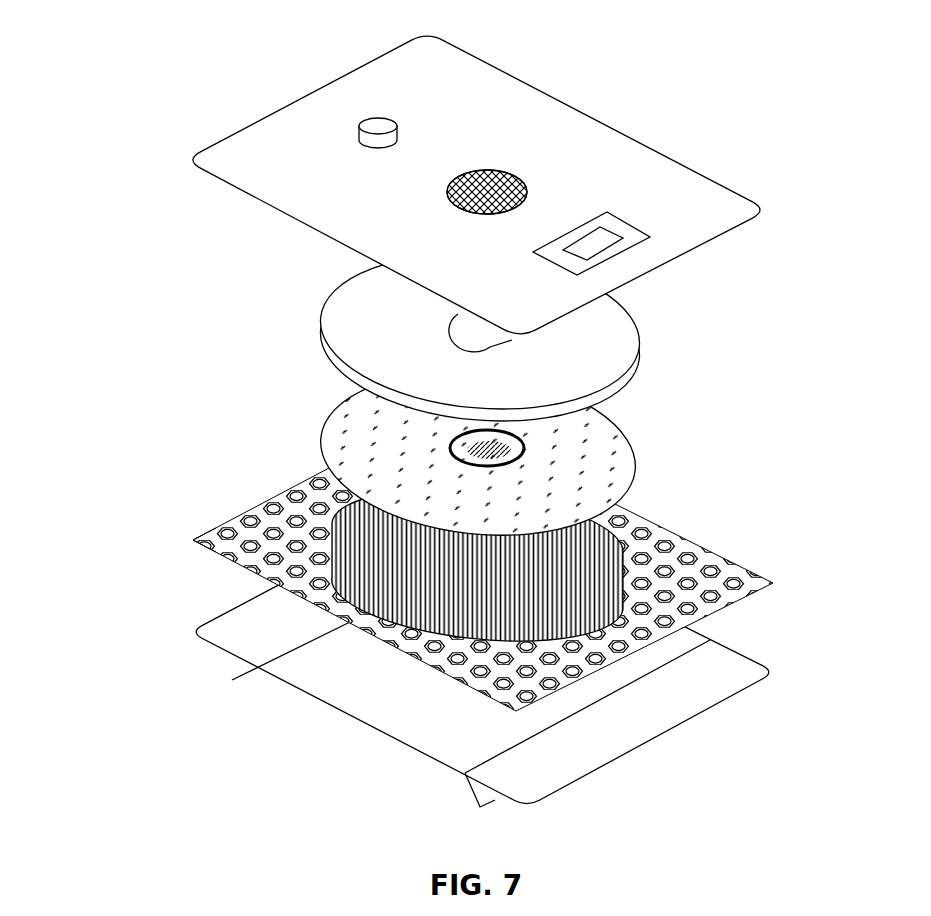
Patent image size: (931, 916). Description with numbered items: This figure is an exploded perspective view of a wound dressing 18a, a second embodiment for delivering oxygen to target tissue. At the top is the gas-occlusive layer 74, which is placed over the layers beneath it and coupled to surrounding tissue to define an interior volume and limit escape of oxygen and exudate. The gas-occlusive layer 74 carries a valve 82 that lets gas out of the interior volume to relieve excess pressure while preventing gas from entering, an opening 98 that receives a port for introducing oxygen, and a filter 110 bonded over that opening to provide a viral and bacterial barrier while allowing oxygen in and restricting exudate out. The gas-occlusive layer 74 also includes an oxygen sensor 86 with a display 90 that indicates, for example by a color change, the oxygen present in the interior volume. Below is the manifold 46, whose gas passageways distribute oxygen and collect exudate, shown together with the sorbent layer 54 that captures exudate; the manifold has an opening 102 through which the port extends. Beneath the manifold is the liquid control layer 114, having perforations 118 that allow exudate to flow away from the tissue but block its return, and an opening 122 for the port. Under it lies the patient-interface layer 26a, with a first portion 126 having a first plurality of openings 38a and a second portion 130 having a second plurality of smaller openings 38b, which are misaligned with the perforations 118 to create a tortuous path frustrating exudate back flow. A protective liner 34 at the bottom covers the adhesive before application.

The wound dressing 18a is at (200, 88).
The gas-occlusive layer 74 is at (655, 145).
The valve 82 is at (365, 145).
The opening of gas-occlusive layer 98 is at (488, 170).
The filter 110 is at (495, 185).
The oxygen sensor 86 is at (630, 248).
The display 90 is at (598, 253).
The manifold 46 is at (338, 287).
The sorbent layer 54 is at (337, 350).
The opening of manifold 102 is at (508, 342).
The liquid control layer 114 is at (620, 443).
The perforations 118 is at (587, 465).
The opening of liquid control layer 122 is at (513, 457).
The first plurality of openings 38a is at (268, 502).
The patient-interface layer 26a is at (227, 522).
The first portion 126 is at (218, 541).
The second portion 130 is at (637, 579).
The second plurality of openings 38b is at (625, 603).
The protective liner 34 is at (197, 618).